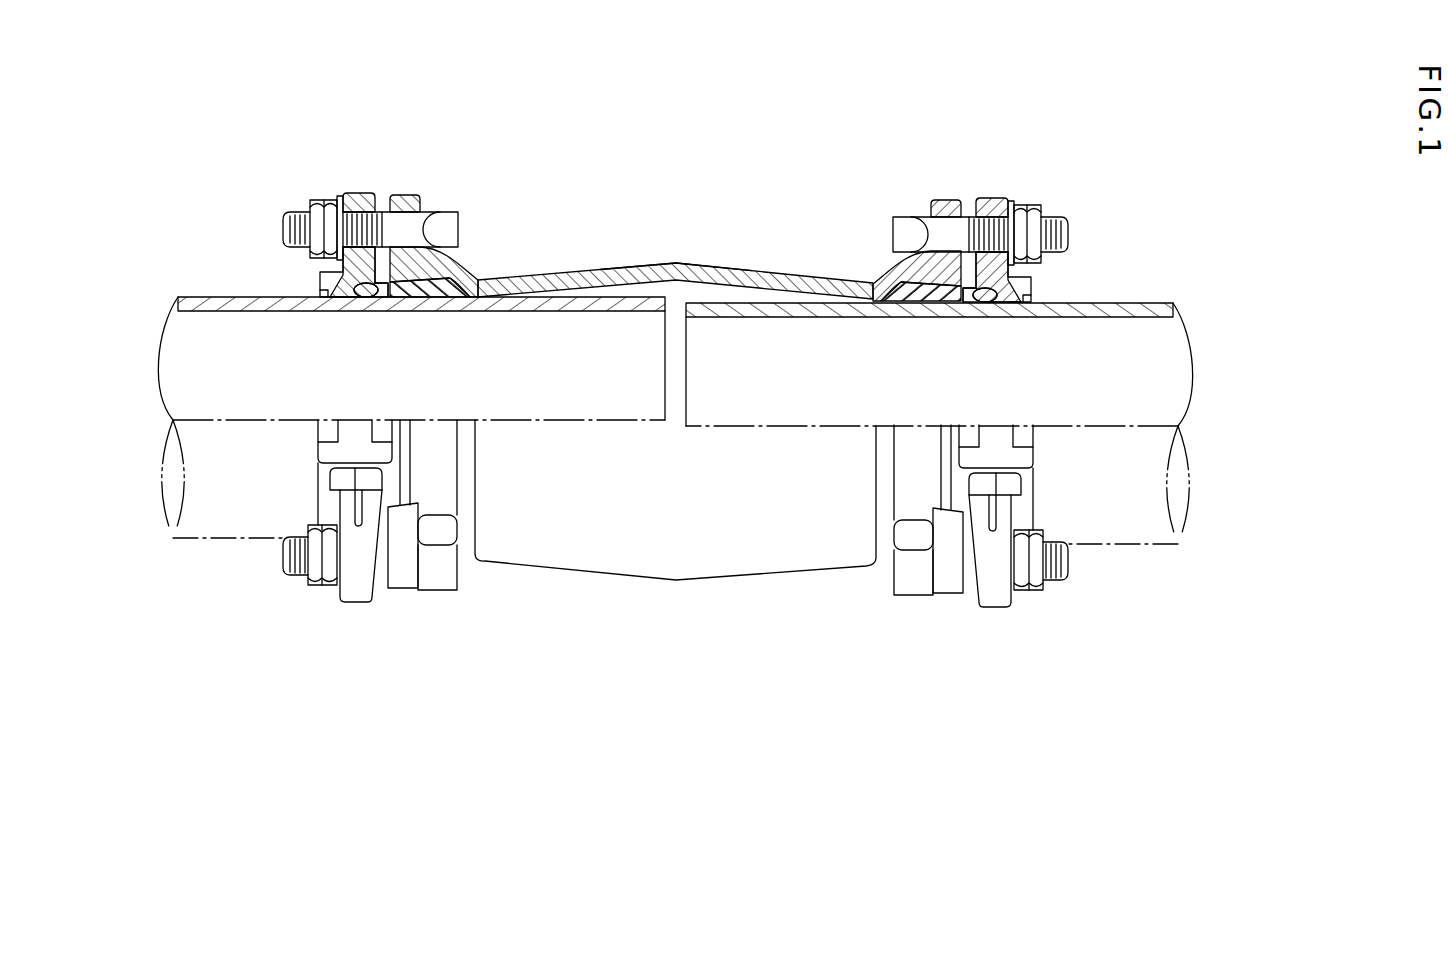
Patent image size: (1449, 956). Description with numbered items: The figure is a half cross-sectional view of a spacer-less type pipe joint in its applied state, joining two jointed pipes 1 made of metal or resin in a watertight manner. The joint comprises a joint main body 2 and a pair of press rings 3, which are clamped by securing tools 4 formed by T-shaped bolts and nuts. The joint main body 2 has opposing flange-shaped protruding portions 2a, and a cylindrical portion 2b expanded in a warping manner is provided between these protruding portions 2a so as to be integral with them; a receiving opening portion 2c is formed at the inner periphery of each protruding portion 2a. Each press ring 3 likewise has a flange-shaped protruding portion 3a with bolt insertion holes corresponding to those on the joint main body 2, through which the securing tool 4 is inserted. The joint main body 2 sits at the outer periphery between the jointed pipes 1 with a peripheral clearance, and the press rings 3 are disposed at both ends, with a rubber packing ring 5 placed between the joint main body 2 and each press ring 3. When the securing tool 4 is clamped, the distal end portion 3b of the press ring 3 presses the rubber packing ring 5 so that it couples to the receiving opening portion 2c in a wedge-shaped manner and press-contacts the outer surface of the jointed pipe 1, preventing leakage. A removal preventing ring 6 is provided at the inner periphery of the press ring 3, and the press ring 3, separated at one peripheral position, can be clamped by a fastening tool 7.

The jointed pipe 1 is at (160, 402).
The fastening tool 7 is at (1200, 375).
The joint main body 2 is at (609, 256).
The flange-shaped protruding portion 2a is at (408, 195).
The cylindrical portion 2b is at (711, 268).
The receiving opening portion 2c is at (430, 283).
The press ring 3 is at (300, 285).
The flange-shaped protruding portion 3a is at (358, 193).
The distal end portion 3b is at (381, 298).
The securing tool 4 is at (318, 196).
The rubber packing ring 5 is at (428, 299).
The removal preventing ring 6 is at (362, 300).